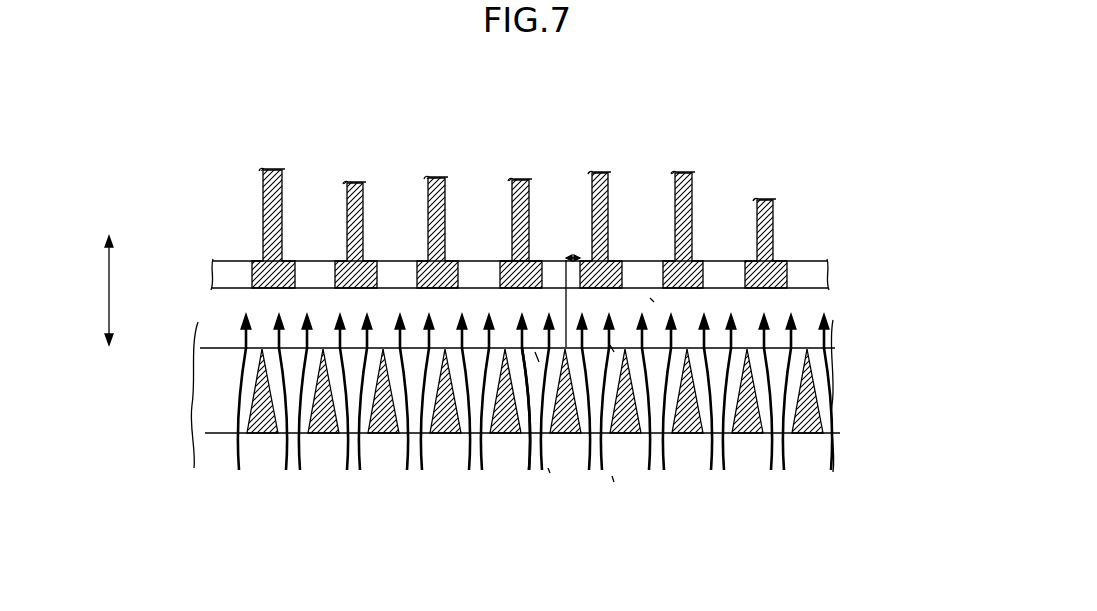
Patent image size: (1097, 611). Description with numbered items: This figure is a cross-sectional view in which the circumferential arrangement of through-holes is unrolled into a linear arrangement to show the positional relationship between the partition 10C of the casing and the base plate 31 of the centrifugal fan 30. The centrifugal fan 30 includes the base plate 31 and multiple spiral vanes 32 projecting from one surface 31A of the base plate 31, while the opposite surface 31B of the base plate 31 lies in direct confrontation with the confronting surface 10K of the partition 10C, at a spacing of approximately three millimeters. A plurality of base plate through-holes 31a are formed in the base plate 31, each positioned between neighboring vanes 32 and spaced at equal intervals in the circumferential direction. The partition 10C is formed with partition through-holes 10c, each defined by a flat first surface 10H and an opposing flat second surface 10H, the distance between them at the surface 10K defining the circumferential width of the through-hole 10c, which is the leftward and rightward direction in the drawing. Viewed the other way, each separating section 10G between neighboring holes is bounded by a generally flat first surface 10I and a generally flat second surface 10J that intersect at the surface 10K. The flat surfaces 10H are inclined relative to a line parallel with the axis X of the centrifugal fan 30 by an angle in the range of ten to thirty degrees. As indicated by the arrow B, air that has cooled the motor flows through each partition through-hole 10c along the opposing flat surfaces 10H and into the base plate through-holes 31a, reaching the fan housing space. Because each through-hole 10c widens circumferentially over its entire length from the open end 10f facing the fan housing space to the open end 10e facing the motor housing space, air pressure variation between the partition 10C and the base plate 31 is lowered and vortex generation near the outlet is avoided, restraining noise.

The centrifugal fan 30 is at (816, 261).
The base plate 31 is at (800, 261).
The one surface of the base plate 31A is at (236, 261).
The opposite surface of the base plate 31B is at (228, 289).
The base plate through-hole 31a is at (550, 260).
The spiral vane 32 is at (447, 195).
The confronting surface of the partition 10K is at (630, 300).
The partition 10C is at (842, 418).
The first surface of separating section 10I is at (566, 352).
The flat surface of partition through-hole 10H is at (560, 397).
The partition through-hole 10c is at (537, 360).
The separating section 10G is at (549, 472).
The open end to the motor housing space 10e is at (613, 480).
The second surface of separating section 10J is at (612, 348).
The open end to the fan housing space 10f is at (652, 300).
The arrow indicating air flow B is at (480, 462).
The axis of the centrifugal fan X is at (109, 277).